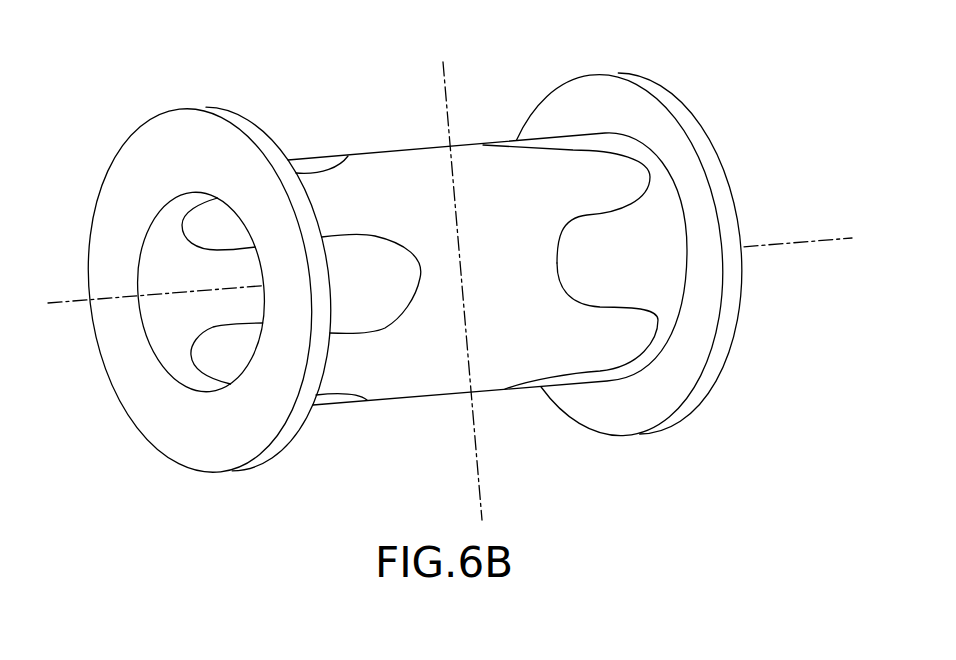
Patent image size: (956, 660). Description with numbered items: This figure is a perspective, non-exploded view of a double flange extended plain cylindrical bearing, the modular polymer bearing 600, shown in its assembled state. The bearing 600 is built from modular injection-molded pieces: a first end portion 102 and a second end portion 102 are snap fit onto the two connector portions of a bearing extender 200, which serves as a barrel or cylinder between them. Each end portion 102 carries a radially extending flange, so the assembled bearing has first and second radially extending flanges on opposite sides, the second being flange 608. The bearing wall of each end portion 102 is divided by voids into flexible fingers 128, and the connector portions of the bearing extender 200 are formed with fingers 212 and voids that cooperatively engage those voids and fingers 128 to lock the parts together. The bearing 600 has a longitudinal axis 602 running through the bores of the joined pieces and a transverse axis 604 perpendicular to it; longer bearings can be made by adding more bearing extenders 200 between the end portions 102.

The modular polymer bearing 600 is at (512, 91).
The first part or end portion 102 is at (221, 448).
The second radially extending flange 608 is at (652, 91).
The bearing extender 200 is at (490, 252).
The fingers 212 is at (613, 200).
The fingers 128 is at (623, 280).
The longitudinal axis 602 is at (783, 243).
The transverse axis 604 is at (205, 138).